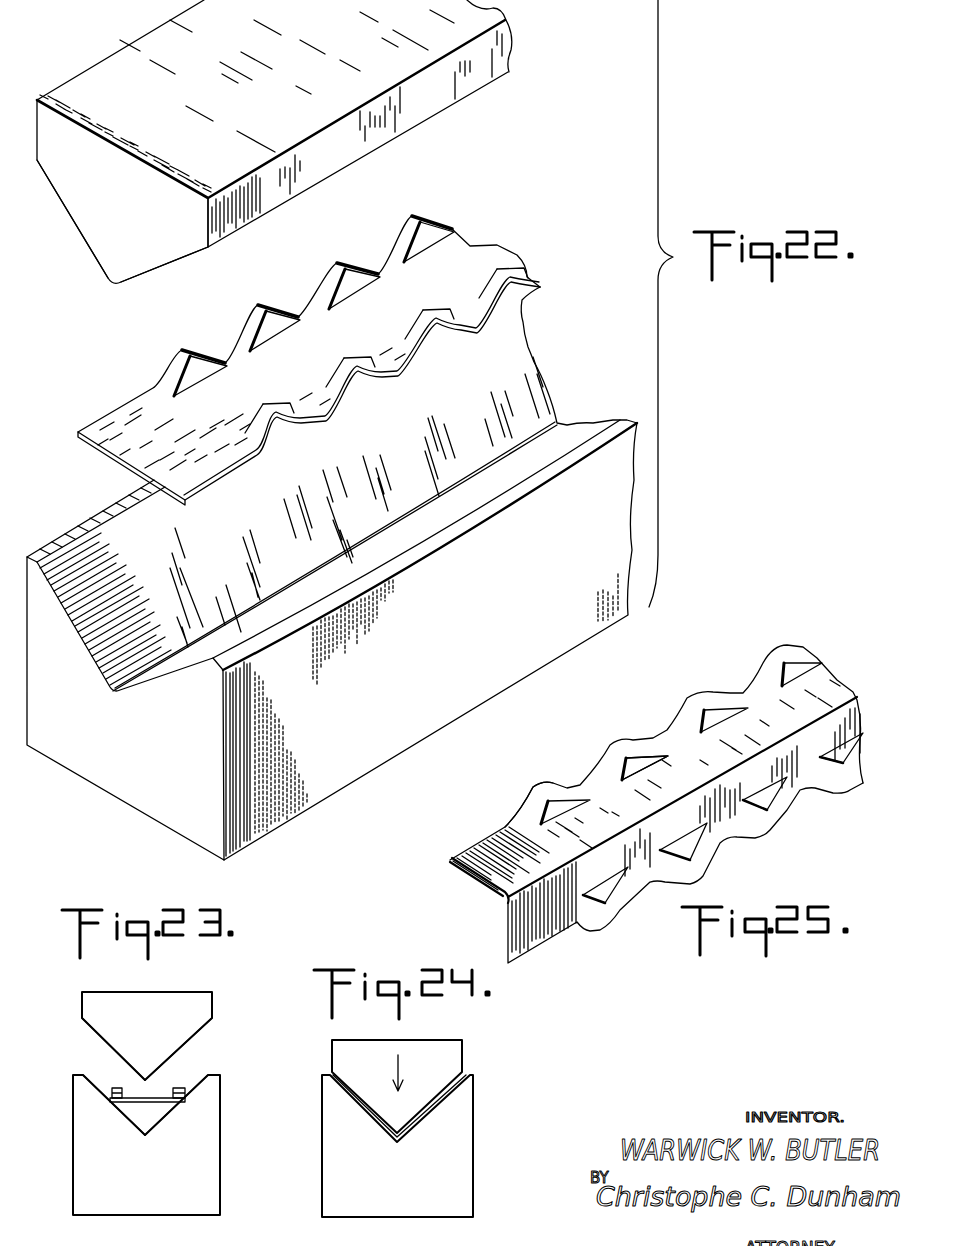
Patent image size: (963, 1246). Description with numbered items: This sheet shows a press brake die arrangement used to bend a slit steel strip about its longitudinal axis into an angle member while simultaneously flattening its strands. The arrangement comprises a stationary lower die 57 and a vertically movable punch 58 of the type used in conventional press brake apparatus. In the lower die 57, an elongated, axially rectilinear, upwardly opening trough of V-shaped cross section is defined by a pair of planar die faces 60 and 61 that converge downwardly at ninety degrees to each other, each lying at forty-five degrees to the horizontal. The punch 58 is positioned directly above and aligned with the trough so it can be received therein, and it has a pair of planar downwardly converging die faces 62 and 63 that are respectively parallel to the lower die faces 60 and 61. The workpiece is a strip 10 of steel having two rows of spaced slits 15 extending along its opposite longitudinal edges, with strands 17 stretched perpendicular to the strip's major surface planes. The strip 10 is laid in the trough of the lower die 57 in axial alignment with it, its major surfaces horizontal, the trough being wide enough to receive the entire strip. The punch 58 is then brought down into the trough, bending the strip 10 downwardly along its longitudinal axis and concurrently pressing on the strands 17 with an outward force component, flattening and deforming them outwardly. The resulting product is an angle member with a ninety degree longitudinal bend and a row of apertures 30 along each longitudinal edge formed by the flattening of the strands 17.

In FIG. 22, the strip 10 is at (472, 253).
In FIG. 25, the strip 10 is at (473, 875).
In FIG. 23, the strip 10 is at (137, 1098).
In FIG. 24, the strip 10 is at (418, 1121).
In FIG. 22, the slits 15 is at (272, 332).
In FIG. 22, the strands 17 is at (375, 400).
In FIG. 25, the strands 17 is at (527, 803).
In FIG. 23, the strands 17 is at (116, 1088).
In FIG. 25, the apertures 30 is at (637, 750).
In FIG. 22, the lower die 57 is at (104, 773).
In FIG. 23, the lower die 57 is at (146, 1145).
In FIG. 24, the lower die 57 is at (397, 1146).
In FIG. 22, the punch 58 is at (437, 97).
In FIG. 23, the punch 58 is at (147, 1036).
In FIG. 24, the punch 58 is at (397, 1086).
In FIG. 22, the die face 60 is at (83, 560).
In FIG. 23, the die face 60 is at (123, 1112).
In FIG. 22, the die face 61 is at (348, 564).
In FIG. 23, the die face 61 is at (167, 1113).
In FIG. 22, the punch die face 62 is at (78, 233).
In FIG. 23, the punch die face 62 is at (102, 1043).
In FIG. 22, the punch die face 63 is at (155, 270).
In FIG. 23, the punch die face 63 is at (190, 1040).